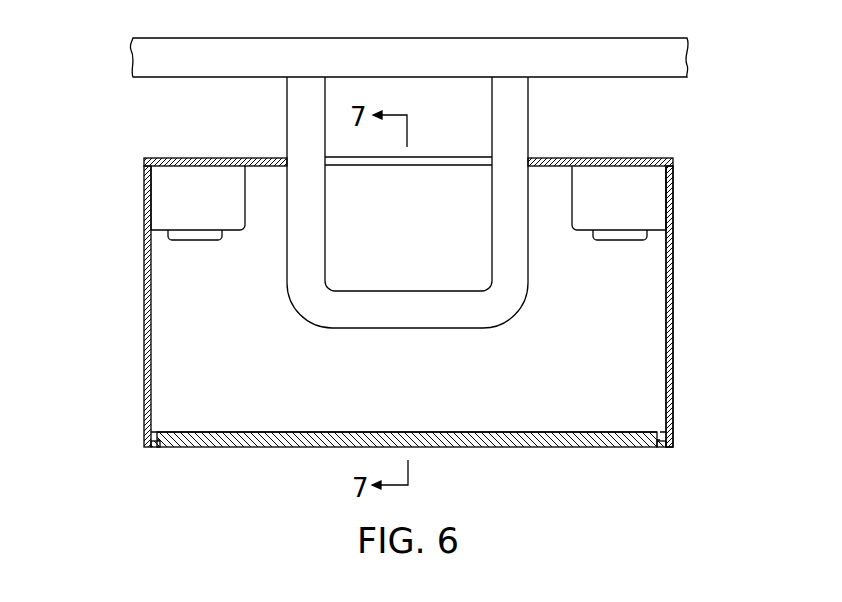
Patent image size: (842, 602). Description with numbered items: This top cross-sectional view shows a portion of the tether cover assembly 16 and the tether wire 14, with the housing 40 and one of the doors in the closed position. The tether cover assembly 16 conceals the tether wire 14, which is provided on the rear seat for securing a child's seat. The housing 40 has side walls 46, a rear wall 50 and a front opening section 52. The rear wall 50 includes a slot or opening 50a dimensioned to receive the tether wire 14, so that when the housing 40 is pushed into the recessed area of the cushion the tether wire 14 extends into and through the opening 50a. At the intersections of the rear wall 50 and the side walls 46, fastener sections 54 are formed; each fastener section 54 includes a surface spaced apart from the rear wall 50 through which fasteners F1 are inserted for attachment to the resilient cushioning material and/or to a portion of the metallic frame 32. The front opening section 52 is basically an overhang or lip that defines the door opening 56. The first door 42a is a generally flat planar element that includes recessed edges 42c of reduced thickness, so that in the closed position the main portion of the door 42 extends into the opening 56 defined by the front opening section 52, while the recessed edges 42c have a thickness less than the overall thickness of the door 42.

The tether wire 14 is at (512, 128).
The tether cover assembly 16 is at (675, 258).
The metallic frame 32 is at (605, 60).
The housing 40 is at (408, 314).
The door 42 is at (526, 447).
The first door 42a is at (265, 431).
The recessed edges 42c is at (155, 448).
The side walls 46 is at (144, 374).
The rear wall 50 is at (638, 157).
The opening 50a is at (443, 157).
The front opening section 52 is at (163, 450).
The fastener sections 54 is at (230, 230).
The opening 56 is at (170, 449).
The fasteners F1 is at (188, 242).